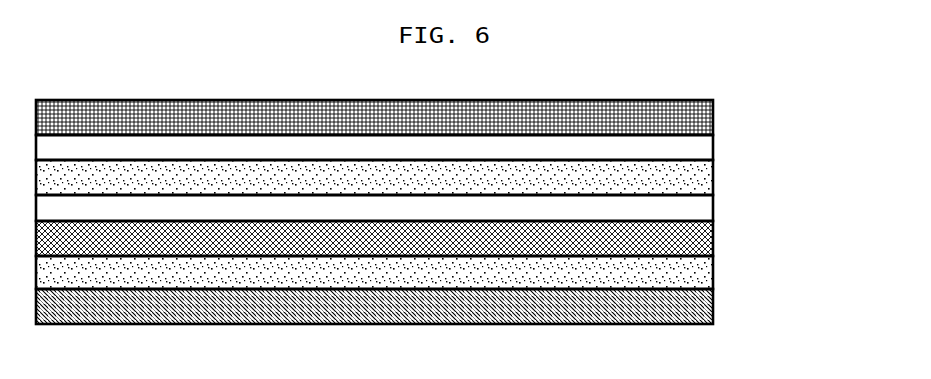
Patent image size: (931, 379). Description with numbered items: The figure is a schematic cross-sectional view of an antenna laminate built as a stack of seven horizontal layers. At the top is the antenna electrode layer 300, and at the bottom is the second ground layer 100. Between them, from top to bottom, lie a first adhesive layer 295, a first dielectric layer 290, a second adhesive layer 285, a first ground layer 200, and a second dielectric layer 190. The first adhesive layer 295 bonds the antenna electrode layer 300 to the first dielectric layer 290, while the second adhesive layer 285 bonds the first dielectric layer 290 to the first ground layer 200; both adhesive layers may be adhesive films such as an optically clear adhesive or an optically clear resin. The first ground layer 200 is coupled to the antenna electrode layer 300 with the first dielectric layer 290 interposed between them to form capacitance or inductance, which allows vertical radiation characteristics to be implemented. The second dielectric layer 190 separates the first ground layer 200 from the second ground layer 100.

The second ground layer 100 is at (704, 308).
The second dielectric layer 190 is at (704, 275).
The first ground layer 200 is at (704, 238).
The second adhesive layer 285 is at (703, 212).
The first dielectric layer 290 is at (703, 178).
The first adhesive layer 295 is at (703, 150).
The antenna electrode layer 300 is at (703, 112).